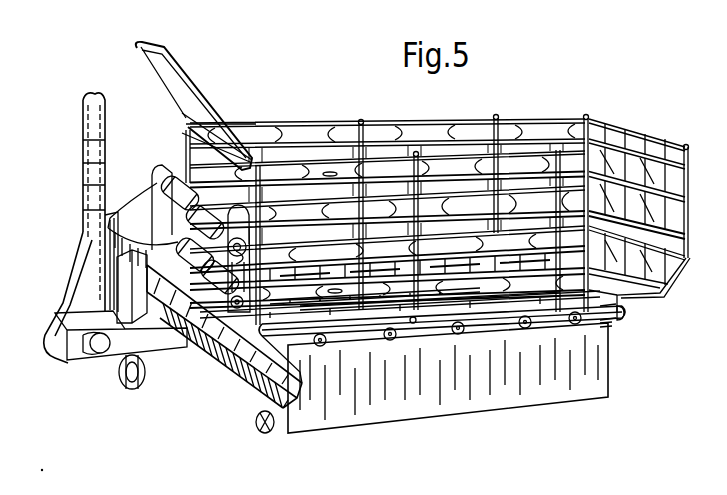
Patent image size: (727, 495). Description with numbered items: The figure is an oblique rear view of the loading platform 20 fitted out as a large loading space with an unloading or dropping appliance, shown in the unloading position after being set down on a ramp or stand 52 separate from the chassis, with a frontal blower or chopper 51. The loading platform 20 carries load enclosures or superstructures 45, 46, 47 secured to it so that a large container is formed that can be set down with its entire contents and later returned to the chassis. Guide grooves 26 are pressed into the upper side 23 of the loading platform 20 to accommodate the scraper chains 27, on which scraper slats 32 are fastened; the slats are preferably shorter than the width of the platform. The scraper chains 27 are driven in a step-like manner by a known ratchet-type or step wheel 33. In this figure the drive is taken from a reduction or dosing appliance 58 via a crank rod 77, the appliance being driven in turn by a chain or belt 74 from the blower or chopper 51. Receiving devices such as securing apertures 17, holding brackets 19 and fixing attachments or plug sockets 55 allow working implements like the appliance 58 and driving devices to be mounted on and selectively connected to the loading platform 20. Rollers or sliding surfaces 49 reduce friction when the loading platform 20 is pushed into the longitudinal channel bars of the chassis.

The securing apertures 17 is at (345, 340).
The holding bracket 19 is at (167, 162).
The loading platform 20 is at (613, 317).
The upper side 23 is at (607, 343).
The guide grooves 26 is at (467, 310).
The scraper chains 27 is at (370, 313).
The scraper slats 32 is at (486, 300).
The ratchet-type wheel 33 is at (285, 350).
The superstructure 45 is at (534, 133).
The superstructure 46 is at (614, 134).
The superstructure 47 is at (188, 84).
The rollers or sliding surfaces 49 is at (320, 347).
The blower or chopper 51 is at (93, 265).
The ramp or stand 52 is at (567, 383).
The fixing attachments 55 is at (624, 313).
The reduction or dosing appliance 58 is at (222, 185).
The chain or belt 74 is at (130, 197).
The crank rod 77 is at (212, 364).